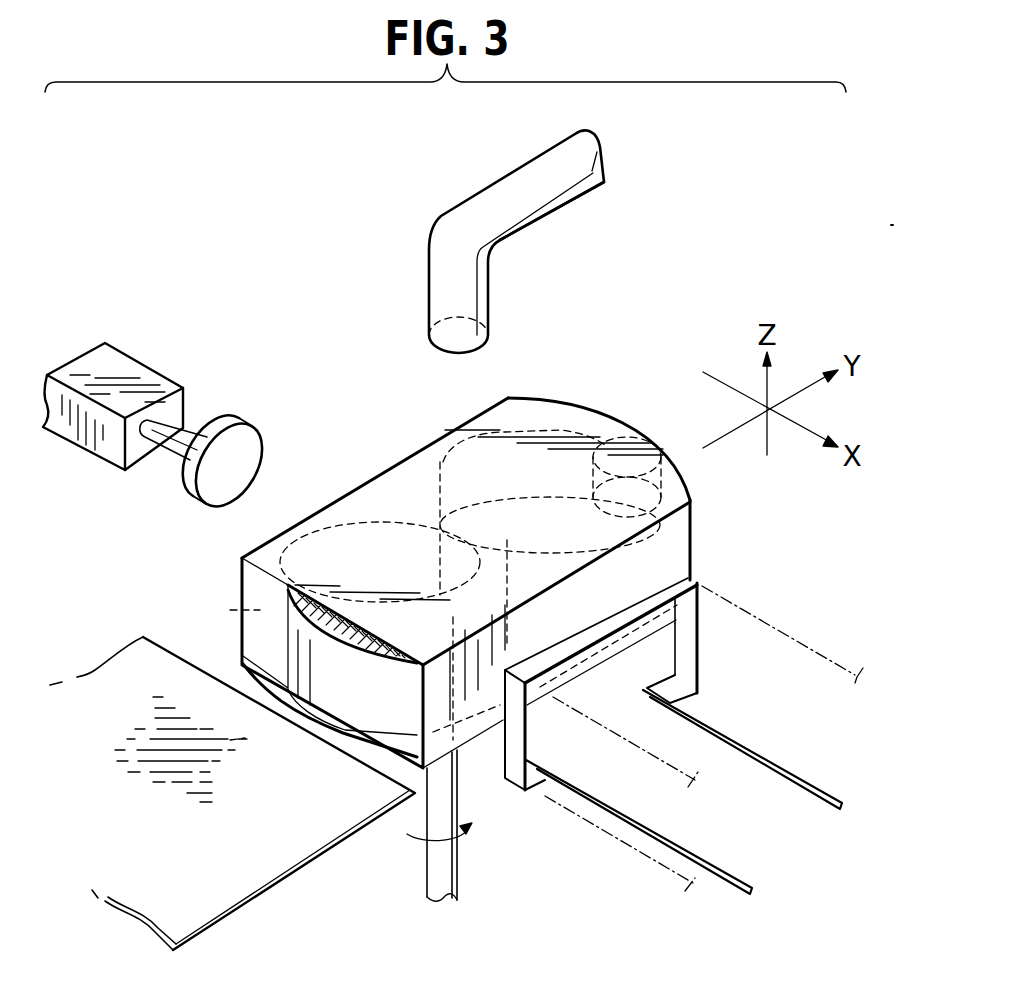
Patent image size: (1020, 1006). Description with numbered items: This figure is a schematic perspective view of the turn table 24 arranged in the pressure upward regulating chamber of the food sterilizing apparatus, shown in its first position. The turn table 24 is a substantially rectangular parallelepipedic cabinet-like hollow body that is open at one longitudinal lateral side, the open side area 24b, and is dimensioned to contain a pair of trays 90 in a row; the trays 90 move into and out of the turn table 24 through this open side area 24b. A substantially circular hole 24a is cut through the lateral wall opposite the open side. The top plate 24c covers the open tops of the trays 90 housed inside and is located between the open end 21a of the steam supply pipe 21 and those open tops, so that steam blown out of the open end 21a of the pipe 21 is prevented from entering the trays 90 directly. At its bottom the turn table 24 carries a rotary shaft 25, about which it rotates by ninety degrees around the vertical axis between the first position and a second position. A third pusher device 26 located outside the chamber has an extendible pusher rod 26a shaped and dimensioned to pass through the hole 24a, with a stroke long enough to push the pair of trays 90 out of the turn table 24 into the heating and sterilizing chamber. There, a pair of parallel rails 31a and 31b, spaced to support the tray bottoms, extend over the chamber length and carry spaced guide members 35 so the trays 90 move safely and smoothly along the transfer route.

The steam supply pipe 21 is at (447, 228).
The open end of the steam supply pipe 21a is at (438, 346).
The turn table 24 is at (696, 468).
The circular hole 24a is at (634, 428).
The open side area 24b is at (263, 606).
The top plate 24c is at (341, 513).
The rotary shaft 25 is at (458, 866).
The third pusher device 26 is at (128, 367).
The extendible pusher rod 26a is at (243, 447).
The rail 31a is at (767, 760).
The rail 31b is at (632, 823).
The guide member 35 is at (690, 585).
The tray 90 is at (452, 432).